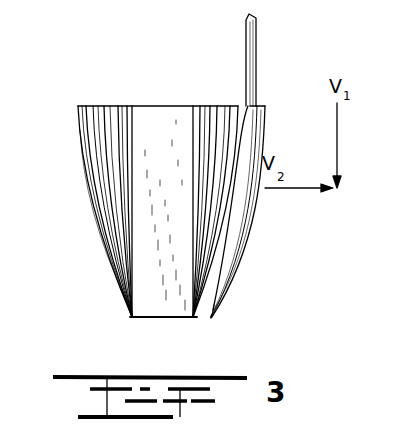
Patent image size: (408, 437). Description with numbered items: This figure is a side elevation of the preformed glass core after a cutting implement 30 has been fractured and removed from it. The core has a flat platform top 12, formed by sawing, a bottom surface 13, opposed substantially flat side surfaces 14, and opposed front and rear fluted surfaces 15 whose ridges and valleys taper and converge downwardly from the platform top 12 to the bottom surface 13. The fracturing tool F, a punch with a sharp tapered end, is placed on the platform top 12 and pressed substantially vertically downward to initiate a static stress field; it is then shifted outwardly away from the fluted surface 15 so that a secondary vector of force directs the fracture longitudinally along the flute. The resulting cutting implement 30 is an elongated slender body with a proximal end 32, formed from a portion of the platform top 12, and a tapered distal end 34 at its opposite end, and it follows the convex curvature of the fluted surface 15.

The flat platform top 12 is at (155, 106).
The bottom surface 13 is at (163, 319).
The flat side surfaces 14 is at (152, 252).
The fluted surfaces 15 is at (92, 214).
The cutting implement 30 is at (249, 229).
The proximal end 32 is at (262, 107).
The distal end 34 is at (212, 318).
The fracturing tool F is at (255, 53).